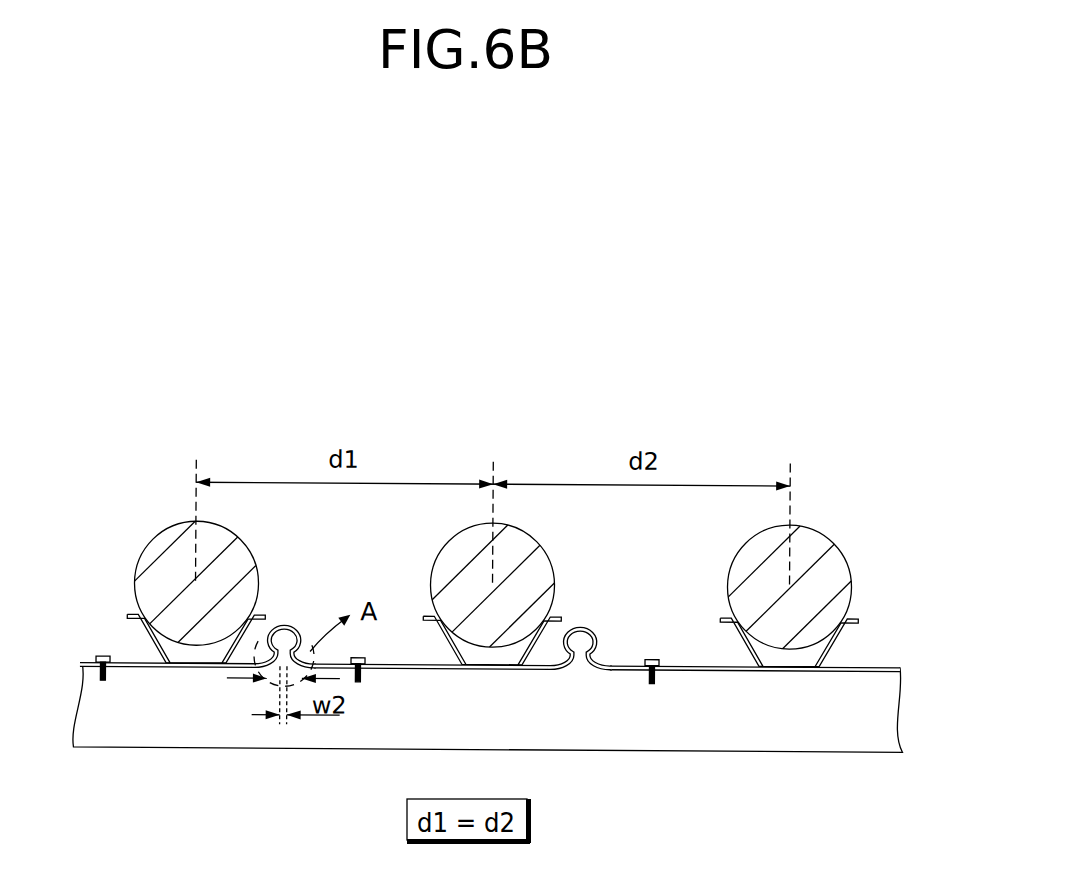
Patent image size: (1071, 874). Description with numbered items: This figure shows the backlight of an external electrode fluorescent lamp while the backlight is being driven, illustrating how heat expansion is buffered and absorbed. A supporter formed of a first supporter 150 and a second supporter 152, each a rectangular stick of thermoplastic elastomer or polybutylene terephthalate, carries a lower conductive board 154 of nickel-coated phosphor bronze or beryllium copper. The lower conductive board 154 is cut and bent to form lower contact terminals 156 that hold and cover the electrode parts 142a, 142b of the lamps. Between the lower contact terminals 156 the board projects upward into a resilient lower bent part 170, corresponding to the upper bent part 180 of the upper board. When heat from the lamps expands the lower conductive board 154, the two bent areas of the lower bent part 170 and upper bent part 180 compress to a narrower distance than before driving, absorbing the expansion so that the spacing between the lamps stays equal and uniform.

The electrode part 142a is at (447, 554).
The electrode part 142b is at (158, 547).
The first supporter 150 is at (488, 732).
The second supporter 152 is at (182, 738).
The lower conductive board 154 is at (83, 661).
The lower contact terminal 156 is at (130, 613).
The lower bent part 170 is at (432, 606).
The upper bent part 180 is at (297, 624).